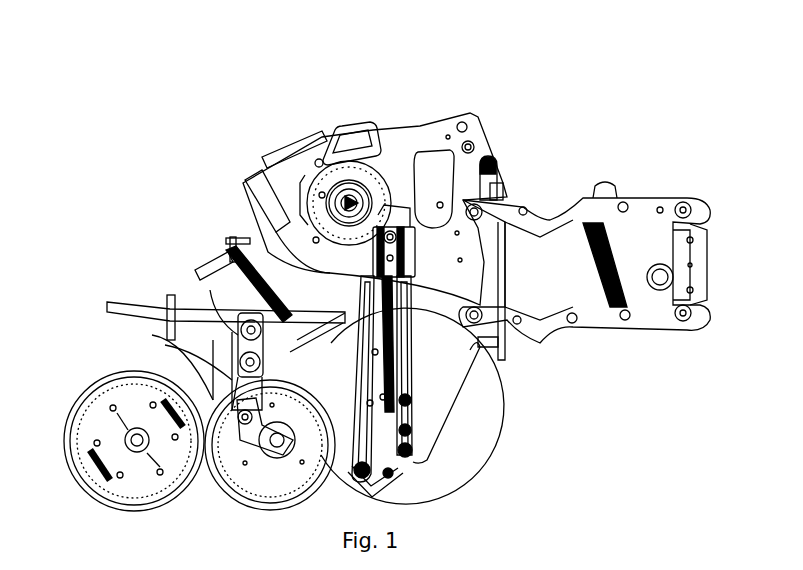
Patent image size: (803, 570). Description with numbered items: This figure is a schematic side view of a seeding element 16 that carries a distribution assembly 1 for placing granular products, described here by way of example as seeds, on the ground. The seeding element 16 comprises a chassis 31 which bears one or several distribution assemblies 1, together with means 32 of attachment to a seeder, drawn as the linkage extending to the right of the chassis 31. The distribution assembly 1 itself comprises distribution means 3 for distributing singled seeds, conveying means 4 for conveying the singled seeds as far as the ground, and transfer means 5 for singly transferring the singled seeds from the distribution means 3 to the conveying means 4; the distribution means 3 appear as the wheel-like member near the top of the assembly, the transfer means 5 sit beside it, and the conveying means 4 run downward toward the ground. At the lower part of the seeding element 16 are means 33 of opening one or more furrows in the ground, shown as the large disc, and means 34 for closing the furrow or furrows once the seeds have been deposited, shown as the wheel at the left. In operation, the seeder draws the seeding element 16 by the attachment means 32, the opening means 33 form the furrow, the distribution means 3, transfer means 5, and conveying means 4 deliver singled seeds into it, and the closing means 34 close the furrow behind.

The distribution assembly 1 is at (298, 126).
The distribution means 3 is at (378, 160).
The conveying means 4 is at (400, 362).
The transfer means 5 is at (405, 195).
The seeding element 16 is at (512, 89).
The chassis 31 is at (283, 247).
The means of attachment 32 is at (552, 210).
The means of opening furrows 33 is at (470, 447).
The means for closing the furrow 34 is at (118, 387).